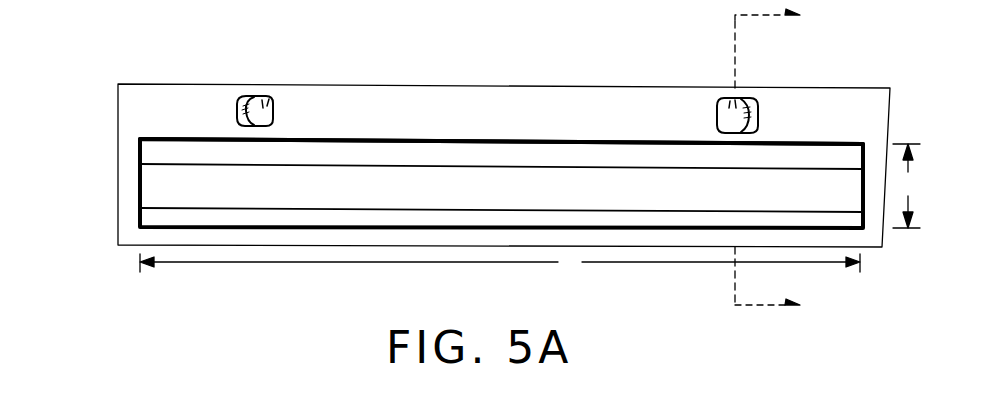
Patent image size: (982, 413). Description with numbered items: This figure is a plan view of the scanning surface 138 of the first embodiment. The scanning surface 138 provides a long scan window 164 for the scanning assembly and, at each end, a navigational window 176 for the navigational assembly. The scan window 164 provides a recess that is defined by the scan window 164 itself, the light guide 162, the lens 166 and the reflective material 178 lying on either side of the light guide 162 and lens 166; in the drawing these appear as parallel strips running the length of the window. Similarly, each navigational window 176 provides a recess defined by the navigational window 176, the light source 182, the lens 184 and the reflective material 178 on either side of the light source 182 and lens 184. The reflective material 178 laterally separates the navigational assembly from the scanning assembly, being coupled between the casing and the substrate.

The scanning surface 138 is at (548, 62).
The light guide 162 is at (154, 147).
The scan window 164 is at (461, 139).
The lens 166 is at (157, 183).
The reflective material 178 is at (150, 217).
The navigational window 176 is at (275, 105).
The light source 182 is at (241, 100).
The lens 184 is at (270, 106).